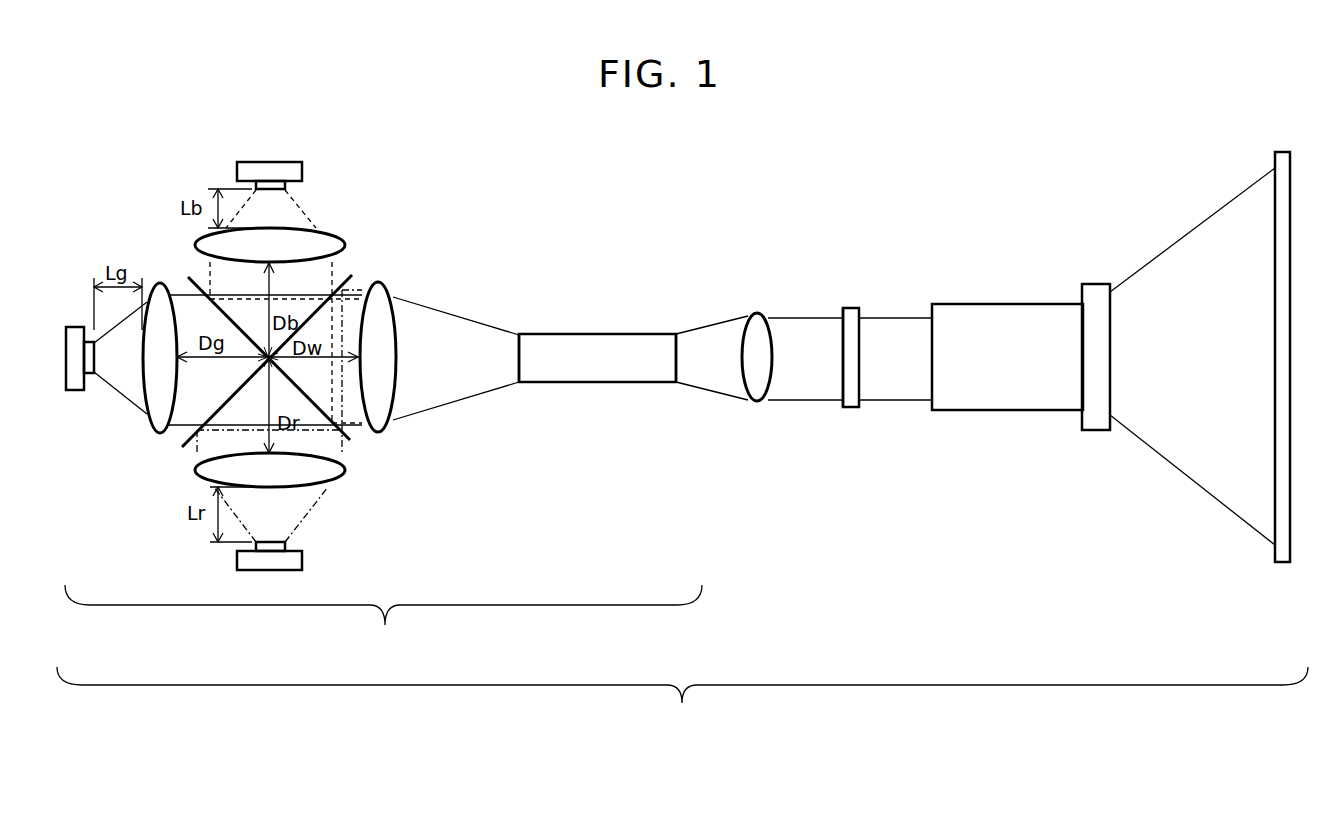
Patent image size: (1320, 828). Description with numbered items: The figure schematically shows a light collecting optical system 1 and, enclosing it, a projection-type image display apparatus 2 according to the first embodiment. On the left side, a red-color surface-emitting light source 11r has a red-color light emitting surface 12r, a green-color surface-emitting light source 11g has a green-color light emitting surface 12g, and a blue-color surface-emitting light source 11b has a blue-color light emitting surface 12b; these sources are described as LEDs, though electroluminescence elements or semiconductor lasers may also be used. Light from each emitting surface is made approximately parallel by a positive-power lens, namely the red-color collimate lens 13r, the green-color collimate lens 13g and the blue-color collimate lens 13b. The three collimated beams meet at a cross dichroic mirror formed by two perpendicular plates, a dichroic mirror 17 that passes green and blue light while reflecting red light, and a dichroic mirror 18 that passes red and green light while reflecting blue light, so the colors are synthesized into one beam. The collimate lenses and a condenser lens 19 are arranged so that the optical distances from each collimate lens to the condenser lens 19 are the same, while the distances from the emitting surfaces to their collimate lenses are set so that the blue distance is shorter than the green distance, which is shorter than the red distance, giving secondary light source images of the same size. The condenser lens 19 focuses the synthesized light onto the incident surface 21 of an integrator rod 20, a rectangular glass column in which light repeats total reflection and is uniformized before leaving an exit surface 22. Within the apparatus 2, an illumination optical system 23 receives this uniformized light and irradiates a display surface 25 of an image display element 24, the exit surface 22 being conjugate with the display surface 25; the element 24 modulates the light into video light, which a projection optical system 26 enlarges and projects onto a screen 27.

The light collecting optical system 1 is at (383, 622).
The projection-type image display apparatus 2 is at (682, 708).
The green-color surface-emitting light source 11g is at (68, 302).
The green-color light emitting surface 12g is at (113, 384).
The green-color collimate lens 13g is at (233, 320).
The blue-color surface-emitting light source 11b is at (328, 175).
The blue-color light emitting surface 12b is at (307, 204).
The blue-color collimate lens 13b is at (246, 292).
The red-color surface-emitting light source 11r is at (324, 551).
The red-color light emitting surface 12r is at (302, 519).
The red-color collimate lens 13r is at (243, 432).
The dichroic mirror 17 is at (225, 402).
The dichroic mirror 18 is at (341, 398).
The condenser lens 19 is at (439, 329).
The integrator rod 20 is at (597, 317).
The incident surface 21 is at (497, 391).
The exit surface 22 is at (712, 382).
The illumination optical system 23 is at (792, 316).
The image display element 24 is at (887, 320).
The display surface 25 is at (823, 406).
The projection optical system 26 is at (1103, 356).
The screen 27 is at (1268, 318).